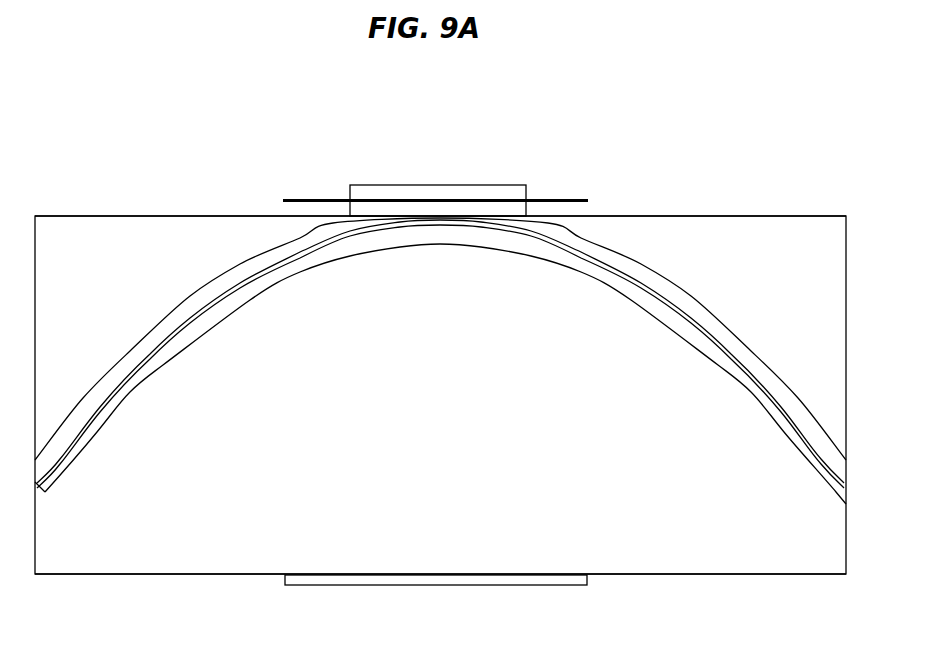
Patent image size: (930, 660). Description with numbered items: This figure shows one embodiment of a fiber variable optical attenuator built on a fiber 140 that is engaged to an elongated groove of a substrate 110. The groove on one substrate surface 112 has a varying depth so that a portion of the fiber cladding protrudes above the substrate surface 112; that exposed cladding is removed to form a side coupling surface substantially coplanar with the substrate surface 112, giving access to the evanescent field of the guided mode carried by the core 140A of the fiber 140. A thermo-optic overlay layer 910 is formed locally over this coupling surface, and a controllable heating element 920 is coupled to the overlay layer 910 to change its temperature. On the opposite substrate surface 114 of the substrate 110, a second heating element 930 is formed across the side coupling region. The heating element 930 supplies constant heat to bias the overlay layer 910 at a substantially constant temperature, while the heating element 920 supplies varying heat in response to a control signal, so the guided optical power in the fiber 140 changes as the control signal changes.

The substrate 110 is at (282, 472).
The substrate surface 112 is at (155, 213).
The opposite substrate surface 114 is at (733, 575).
The fiber 140 is at (181, 281).
The fiber core 140A is at (691, 287).
The thermo-optic overlay layer 910 is at (343, 170).
The controllable heating element 920 is at (575, 191).
The second heating element 930 is at (510, 581).